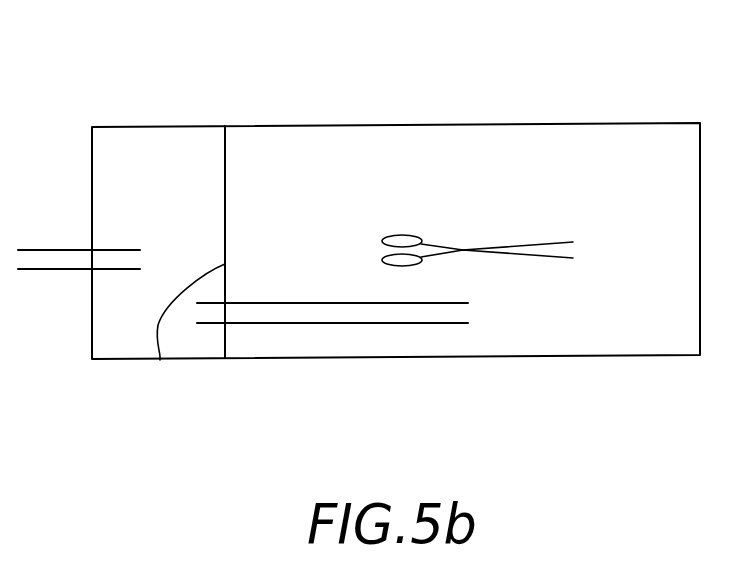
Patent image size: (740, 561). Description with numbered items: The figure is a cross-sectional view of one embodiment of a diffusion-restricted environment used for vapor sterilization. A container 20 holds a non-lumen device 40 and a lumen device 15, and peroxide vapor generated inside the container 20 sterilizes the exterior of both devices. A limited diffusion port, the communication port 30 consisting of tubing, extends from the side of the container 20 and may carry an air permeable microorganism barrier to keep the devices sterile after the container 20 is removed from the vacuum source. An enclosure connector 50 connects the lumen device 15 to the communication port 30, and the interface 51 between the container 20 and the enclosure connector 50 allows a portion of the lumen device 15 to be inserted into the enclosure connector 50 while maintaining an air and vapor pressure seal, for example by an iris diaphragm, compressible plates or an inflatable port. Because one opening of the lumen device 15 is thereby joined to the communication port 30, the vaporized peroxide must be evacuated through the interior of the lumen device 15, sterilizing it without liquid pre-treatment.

The lumen device 15 is at (413, 324).
The container 20 is at (612, 356).
The communication port 30 is at (38, 250).
The non-lumen device 40 is at (458, 210).
The enclosure connector 50 is at (176, 172).
The interface 51 is at (160, 360).